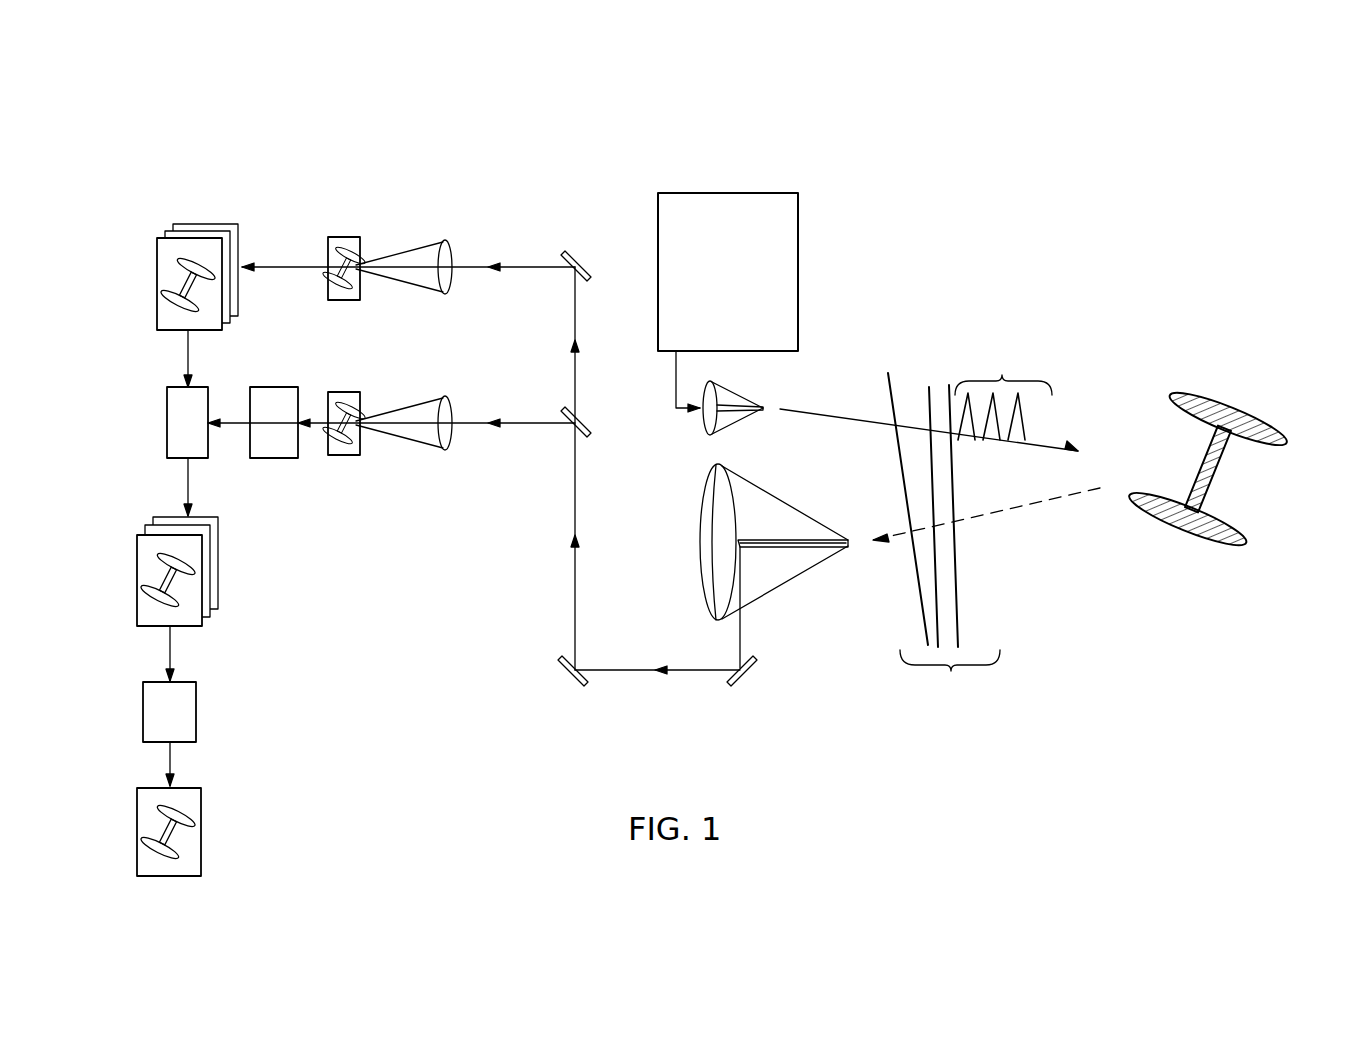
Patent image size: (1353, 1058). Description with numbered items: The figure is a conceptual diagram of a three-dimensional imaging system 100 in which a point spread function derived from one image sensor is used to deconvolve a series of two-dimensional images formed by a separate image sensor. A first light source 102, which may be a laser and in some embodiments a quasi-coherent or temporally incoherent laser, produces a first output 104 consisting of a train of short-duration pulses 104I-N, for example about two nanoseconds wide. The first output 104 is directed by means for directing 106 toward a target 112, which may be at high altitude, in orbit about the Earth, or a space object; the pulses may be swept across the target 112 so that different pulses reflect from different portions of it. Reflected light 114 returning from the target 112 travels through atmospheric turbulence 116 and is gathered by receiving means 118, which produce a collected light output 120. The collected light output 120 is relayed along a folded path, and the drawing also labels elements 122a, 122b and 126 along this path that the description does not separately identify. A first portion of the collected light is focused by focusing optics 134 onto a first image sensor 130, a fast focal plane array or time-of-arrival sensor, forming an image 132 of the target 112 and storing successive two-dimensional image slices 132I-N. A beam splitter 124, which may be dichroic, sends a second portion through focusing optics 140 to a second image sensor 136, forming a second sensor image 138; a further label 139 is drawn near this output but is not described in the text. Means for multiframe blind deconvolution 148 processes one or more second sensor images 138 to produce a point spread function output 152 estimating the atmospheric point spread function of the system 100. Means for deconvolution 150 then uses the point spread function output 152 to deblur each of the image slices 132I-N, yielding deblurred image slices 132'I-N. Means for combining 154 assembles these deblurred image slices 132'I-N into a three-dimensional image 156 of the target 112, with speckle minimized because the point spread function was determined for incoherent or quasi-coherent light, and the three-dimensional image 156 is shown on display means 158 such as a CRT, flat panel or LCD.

The three-dimensional imaging system 100 is at (690, 94).
The first light source 102 is at (728, 193).
The first output 104 is at (677, 381).
The sequence of pulses 104I-N is at (1003, 396).
The means for directing 106 is at (740, 392).
The target 112 is at (1214, 478).
The reflected light 114 is at (1042, 506).
The atmospheric turbulence 116 is at (944, 540).
The receiving means 118 is at (718, 542).
The collected light output 120 is at (748, 622).
The first mirror 122a is at (750, 674).
The second mirror 122b is at (564, 678).
The beam splitter 124 is at (584, 427).
The beam splitter 126 is at (582, 261).
The first image sensor 130 is at (328, 251).
The image 132 is at (344, 251).
The image slices 132I-N is at (182, 238).
The deblurred image slices 132'I-N is at (216, 571).
The focusing optics 134 is at (447, 241).
The second image sensor 136 is at (348, 458).
The second sensor image 138 is at (350, 392).
The detector output 139 is at (316, 420).
The focusing optics 140 is at (447, 397).
The means for multiframe blind deconvolution 148 is at (278, 387).
The means for deconvolution 150 is at (167, 400).
The point spread function output 152 is at (228, 417).
The means for combining 154 is at (196, 712).
The three-dimensional image 156 is at (178, 834).
The display means 158 is at (201, 808).